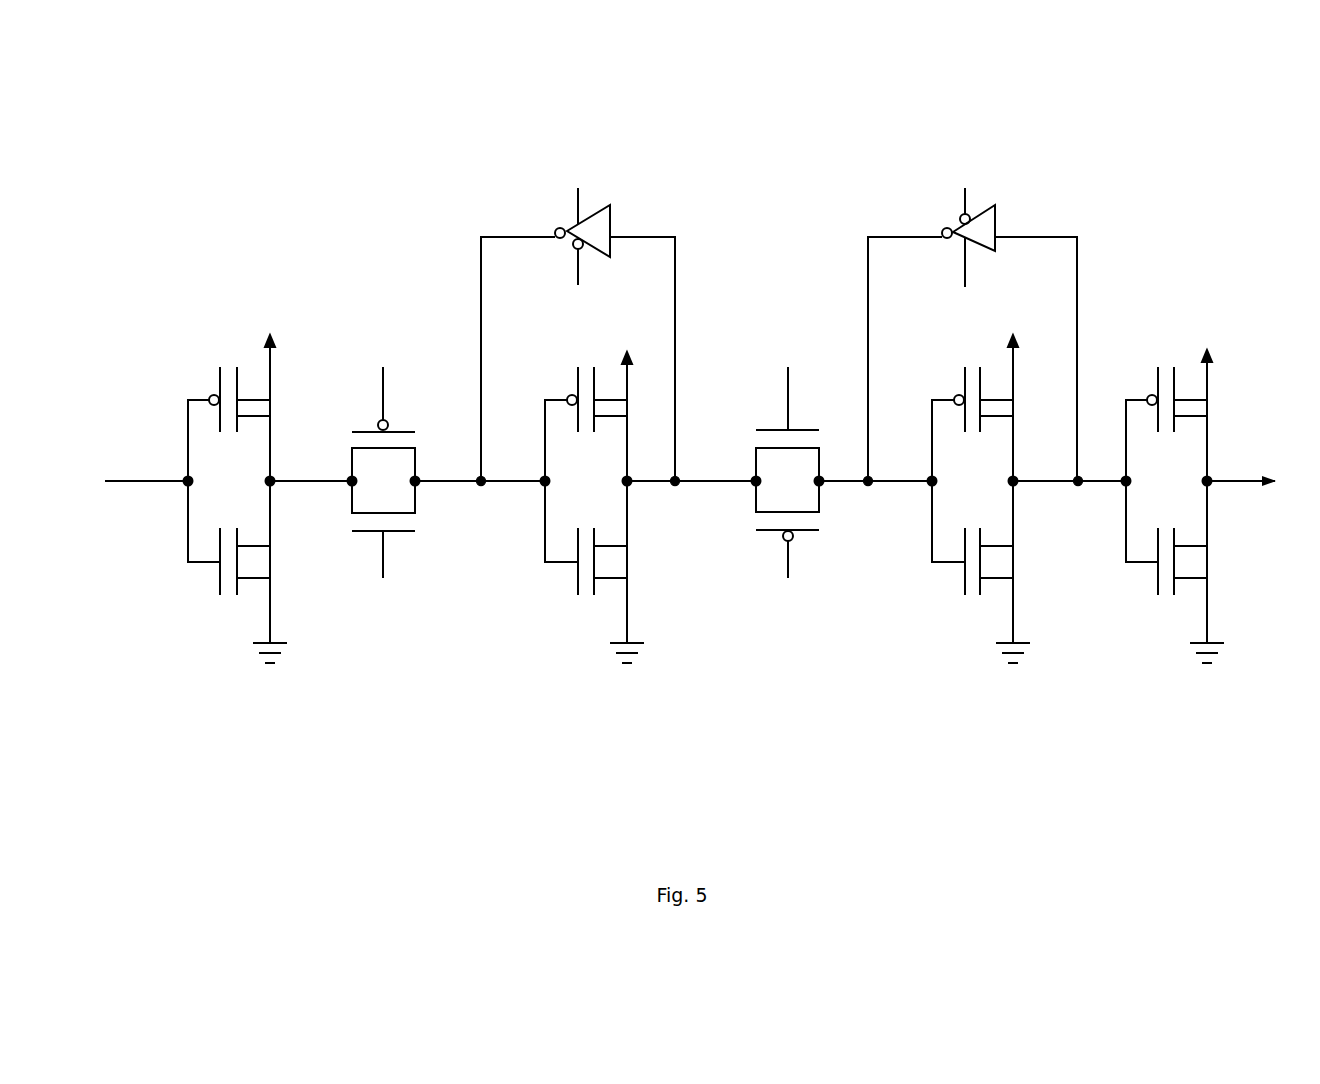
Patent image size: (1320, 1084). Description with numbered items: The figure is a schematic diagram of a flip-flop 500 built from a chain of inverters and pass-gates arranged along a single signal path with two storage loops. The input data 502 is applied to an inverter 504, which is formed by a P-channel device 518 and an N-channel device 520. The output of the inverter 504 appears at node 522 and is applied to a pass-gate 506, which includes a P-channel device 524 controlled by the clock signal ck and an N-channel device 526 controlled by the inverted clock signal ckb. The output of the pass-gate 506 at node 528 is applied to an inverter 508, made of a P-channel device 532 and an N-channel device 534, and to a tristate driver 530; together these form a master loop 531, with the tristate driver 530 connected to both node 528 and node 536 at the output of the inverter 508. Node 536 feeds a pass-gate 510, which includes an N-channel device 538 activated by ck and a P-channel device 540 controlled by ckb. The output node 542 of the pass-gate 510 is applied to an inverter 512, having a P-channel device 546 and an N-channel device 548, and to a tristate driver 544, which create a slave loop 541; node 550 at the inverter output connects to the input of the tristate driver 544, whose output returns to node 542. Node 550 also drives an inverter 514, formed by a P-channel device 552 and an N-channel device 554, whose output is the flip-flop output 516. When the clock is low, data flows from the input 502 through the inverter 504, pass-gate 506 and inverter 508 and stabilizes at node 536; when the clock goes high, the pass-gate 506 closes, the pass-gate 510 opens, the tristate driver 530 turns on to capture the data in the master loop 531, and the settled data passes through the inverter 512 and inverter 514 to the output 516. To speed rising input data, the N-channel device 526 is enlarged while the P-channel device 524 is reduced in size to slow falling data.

The flip-flop 500 is at (870, 822).
The input data 502 is at (133, 468).
The inverter 504 is at (238, 490).
The pass-gate 506 is at (395, 533).
The inverter 508 is at (588, 564).
The pass-gate 510 is at (776, 556).
The inverter 512 is at (1012, 565).
The inverter 514 is at (1206, 538).
The output 516 is at (1268, 465).
The P-channel device 518 is at (203, 382).
The N-channel device 520 is at (270, 560).
The node 522 is at (280, 452).
The P-channel device 524 is at (410, 442).
The N-channel device 526 is at (417, 522).
The node 528 is at (538, 497).
The tristate driver 530 is at (678, 195).
The master loop 531 is at (605, 281).
The P-channel device 532 is at (585, 368).
The N-channel device 534 is at (627, 549).
The node 536 is at (685, 490).
The N-channel device 538 is at (740, 437).
The P-channel device 540 is at (813, 518).
The slave loop 541 is at (998, 301).
The output node 542 is at (873, 493).
The tristate driver 544 is at (1081, 215).
The P-channel device 546 is at (957, 385).
The N-channel device 548 is at (1002, 563).
The node 550 is at (1083, 455).
The P-channel device 552 is at (1165, 363).
The N-channel device 554 is at (1223, 547).